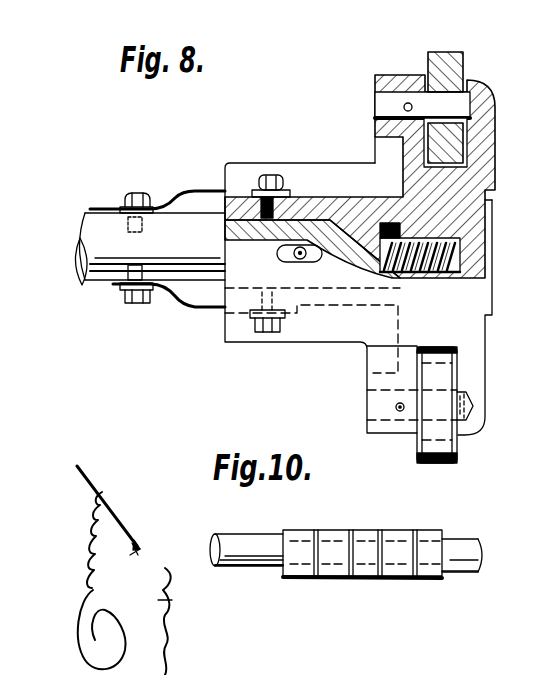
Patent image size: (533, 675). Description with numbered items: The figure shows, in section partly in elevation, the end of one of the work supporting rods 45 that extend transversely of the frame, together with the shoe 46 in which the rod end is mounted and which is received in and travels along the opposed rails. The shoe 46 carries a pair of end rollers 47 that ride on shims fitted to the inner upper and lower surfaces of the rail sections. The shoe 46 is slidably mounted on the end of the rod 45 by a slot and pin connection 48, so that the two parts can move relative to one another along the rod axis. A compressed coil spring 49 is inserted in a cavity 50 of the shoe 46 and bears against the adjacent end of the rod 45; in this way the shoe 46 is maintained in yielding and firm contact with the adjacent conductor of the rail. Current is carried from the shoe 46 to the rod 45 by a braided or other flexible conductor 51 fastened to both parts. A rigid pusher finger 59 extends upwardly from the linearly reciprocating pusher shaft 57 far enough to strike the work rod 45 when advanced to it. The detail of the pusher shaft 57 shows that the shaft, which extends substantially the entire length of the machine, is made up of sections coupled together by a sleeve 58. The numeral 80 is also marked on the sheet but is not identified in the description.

In FIG. 8, the work supporting rod 45 is at (95, 232).
In FIG. 8, the shoe 46 is at (333, 335).
In FIG. 8, the end roller 47 is at (450, 73).
In FIG. 8, the slot and pin connection 48 is at (298, 262).
In FIG. 8, the compressed coil spring 49 is at (445, 240).
In FIG. 8, the cavity 50 is at (490, 207).
In FIG. 8, the flexible conductor 51 is at (210, 313).
In FIG. 10, the pusher shaft 57 is at (243, 558).
In FIG. 10, the sleeve 58 is at (388, 582).
In FIG. 8, the pusher finger 59 is at (532, 428).
In FIG. 10, the reference mark 80 is at (532, 652).